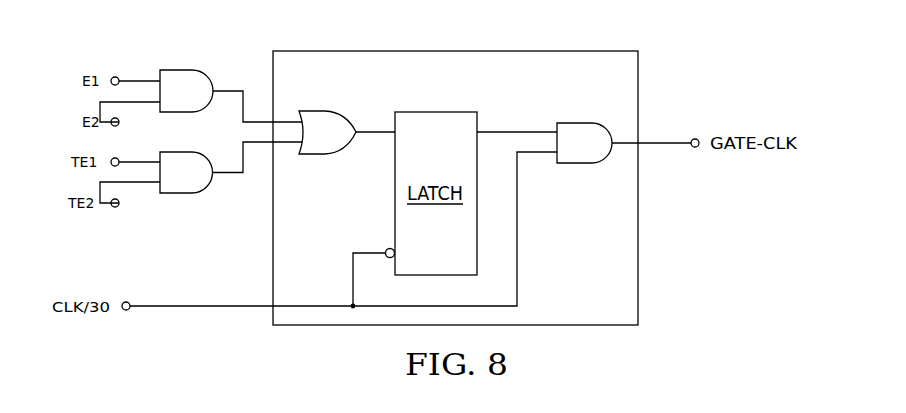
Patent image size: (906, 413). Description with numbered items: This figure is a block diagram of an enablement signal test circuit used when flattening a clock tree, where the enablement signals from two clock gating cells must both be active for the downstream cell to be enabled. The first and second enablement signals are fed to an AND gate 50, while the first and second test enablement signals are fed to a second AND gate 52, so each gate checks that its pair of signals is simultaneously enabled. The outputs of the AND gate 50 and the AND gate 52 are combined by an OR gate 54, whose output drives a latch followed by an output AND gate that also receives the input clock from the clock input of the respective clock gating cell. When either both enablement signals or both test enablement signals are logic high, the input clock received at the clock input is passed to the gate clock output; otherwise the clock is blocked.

The AND gate 50 is at (175, 68).
The AND gate 52 is at (175, 195).
The OR gate 54 is at (310, 110).